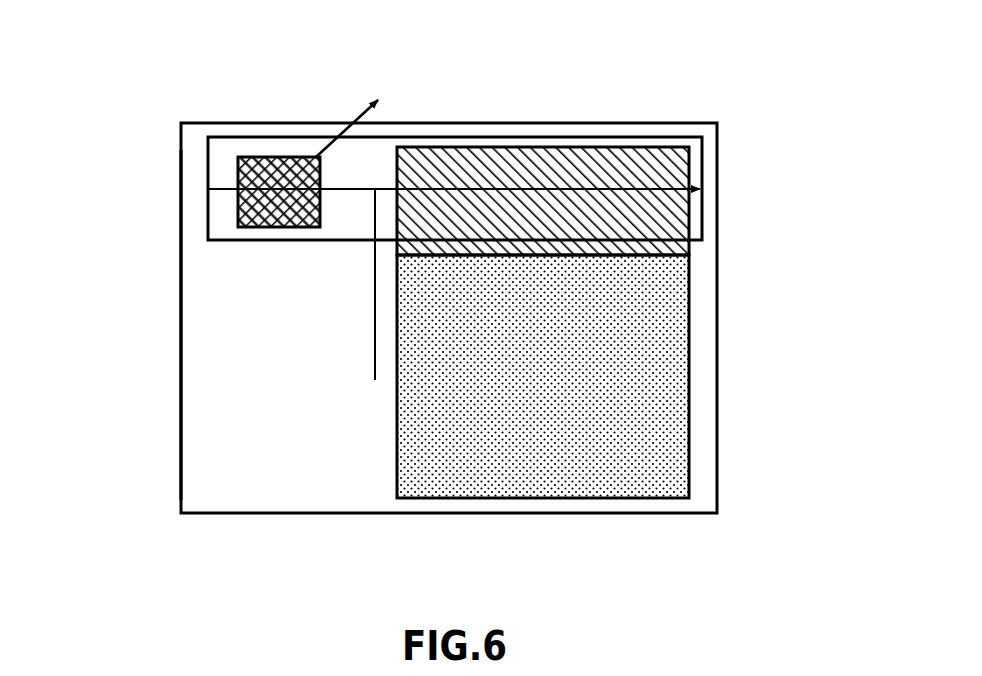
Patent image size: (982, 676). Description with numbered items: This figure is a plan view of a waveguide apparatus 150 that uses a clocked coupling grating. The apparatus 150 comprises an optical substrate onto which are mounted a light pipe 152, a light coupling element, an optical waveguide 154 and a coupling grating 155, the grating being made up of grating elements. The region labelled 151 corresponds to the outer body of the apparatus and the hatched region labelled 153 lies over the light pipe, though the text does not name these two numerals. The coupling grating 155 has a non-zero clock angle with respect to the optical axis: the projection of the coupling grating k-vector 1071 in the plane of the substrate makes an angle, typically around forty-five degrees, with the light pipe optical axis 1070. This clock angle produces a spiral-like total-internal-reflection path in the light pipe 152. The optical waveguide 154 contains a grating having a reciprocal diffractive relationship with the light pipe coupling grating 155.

The apparatus 150 is at (700, 75).
The substrate 151 is at (181, 335).
The light pipe 152 is at (388, 137).
The first layer (hatched region) 153 is at (704, 188).
The optical waveguide 154 is at (690, 468).
The coupling grating 155 is at (238, 197).
The light pipe optical axis 1070 is at (375, 380).
The coupling grating k-vector 1071 is at (329, 138).